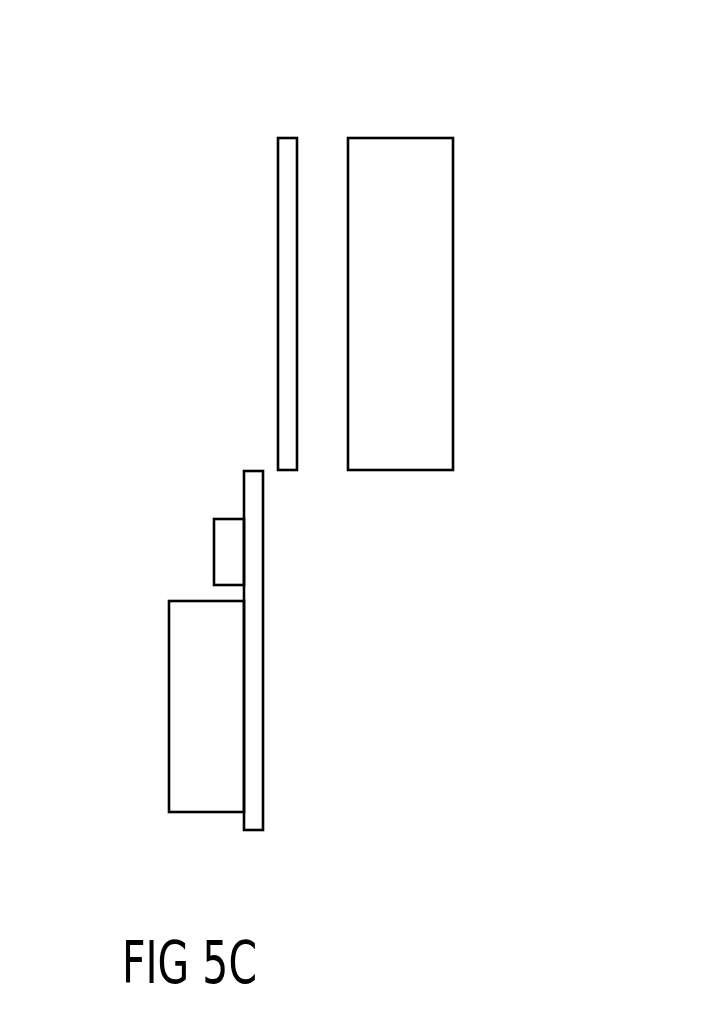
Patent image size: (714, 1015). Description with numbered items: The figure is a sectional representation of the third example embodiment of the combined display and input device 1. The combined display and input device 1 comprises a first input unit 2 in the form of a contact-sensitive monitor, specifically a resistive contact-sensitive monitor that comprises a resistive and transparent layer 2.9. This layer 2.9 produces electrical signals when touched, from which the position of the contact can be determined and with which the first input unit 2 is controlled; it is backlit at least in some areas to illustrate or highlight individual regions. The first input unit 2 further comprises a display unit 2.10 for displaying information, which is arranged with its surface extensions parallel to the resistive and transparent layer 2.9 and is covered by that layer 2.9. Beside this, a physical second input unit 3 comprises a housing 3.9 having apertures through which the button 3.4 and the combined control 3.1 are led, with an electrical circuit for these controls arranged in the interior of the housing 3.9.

The combined display and input device 1 is at (133, 64).
The first input unit 2 is at (320, 128).
The resistive and transparent layer 2.9 is at (288, 232).
The display unit 2.10 is at (430, 245).
The second input unit 3 is at (277, 643).
The combined control 3.1 is at (188, 687).
The button 3.4 is at (227, 552).
The housing 3.9 is at (252, 718).